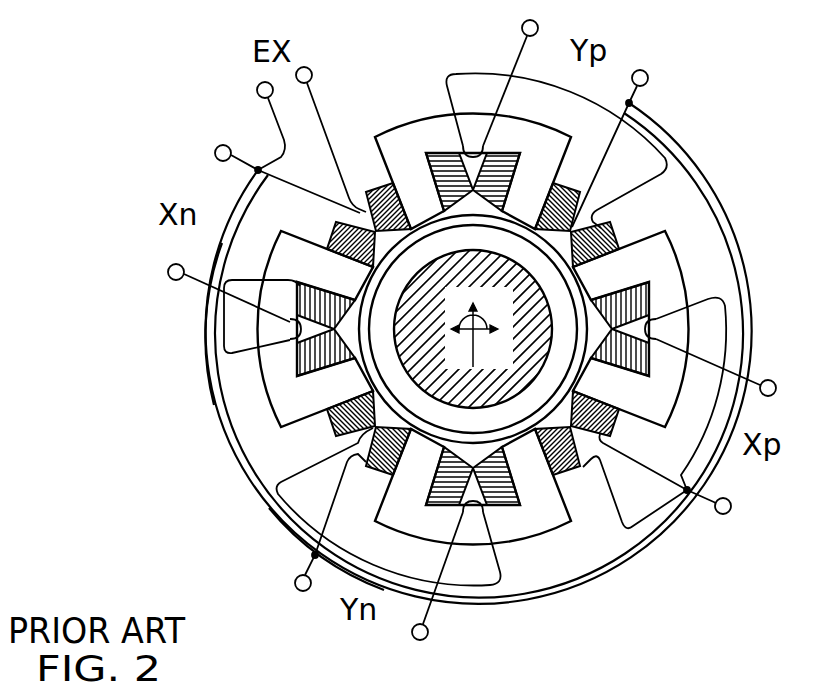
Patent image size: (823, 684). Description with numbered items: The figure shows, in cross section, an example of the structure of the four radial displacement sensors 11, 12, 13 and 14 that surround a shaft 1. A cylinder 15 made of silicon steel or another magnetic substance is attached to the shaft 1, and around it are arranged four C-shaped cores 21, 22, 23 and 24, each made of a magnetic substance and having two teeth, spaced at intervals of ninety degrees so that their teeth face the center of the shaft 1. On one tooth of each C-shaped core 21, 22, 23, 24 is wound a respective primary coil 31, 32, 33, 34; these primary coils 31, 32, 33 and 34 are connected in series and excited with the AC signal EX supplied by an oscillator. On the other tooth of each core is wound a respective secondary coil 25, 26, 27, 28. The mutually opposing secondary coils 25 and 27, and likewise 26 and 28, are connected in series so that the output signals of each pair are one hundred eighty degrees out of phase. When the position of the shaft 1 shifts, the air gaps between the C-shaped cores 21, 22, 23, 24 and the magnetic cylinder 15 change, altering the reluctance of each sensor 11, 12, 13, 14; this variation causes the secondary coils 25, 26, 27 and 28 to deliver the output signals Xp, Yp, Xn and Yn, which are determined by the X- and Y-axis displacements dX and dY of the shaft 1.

The shaft 1 is at (510, 279).
The radial displacement sensor 11 is at (735, 218).
The radial displacement sensor 12 is at (434, 78).
The radial displacement sensor 13 is at (203, 388).
The radial displacement sensor 14 is at (296, 542).
The magnetic substance cylinder 15 is at (473, 418).
The C-shaped core 21 is at (652, 268).
The C-shaped core 22 is at (410, 155).
The C-shaped core 23 is at (304, 397).
The C-shaped core 24 is at (500, 523).
The secondary coil 25 is at (600, 438).
The secondary coil 26 is at (507, 210).
The secondary coil 27 is at (338, 234).
The secondary coil 28 is at (364, 470).
The primary coil 31 is at (605, 222).
The primary coil 32 is at (382, 187).
The primary coil 33 is at (332, 424).
The primary coil 34 is at (579, 470).